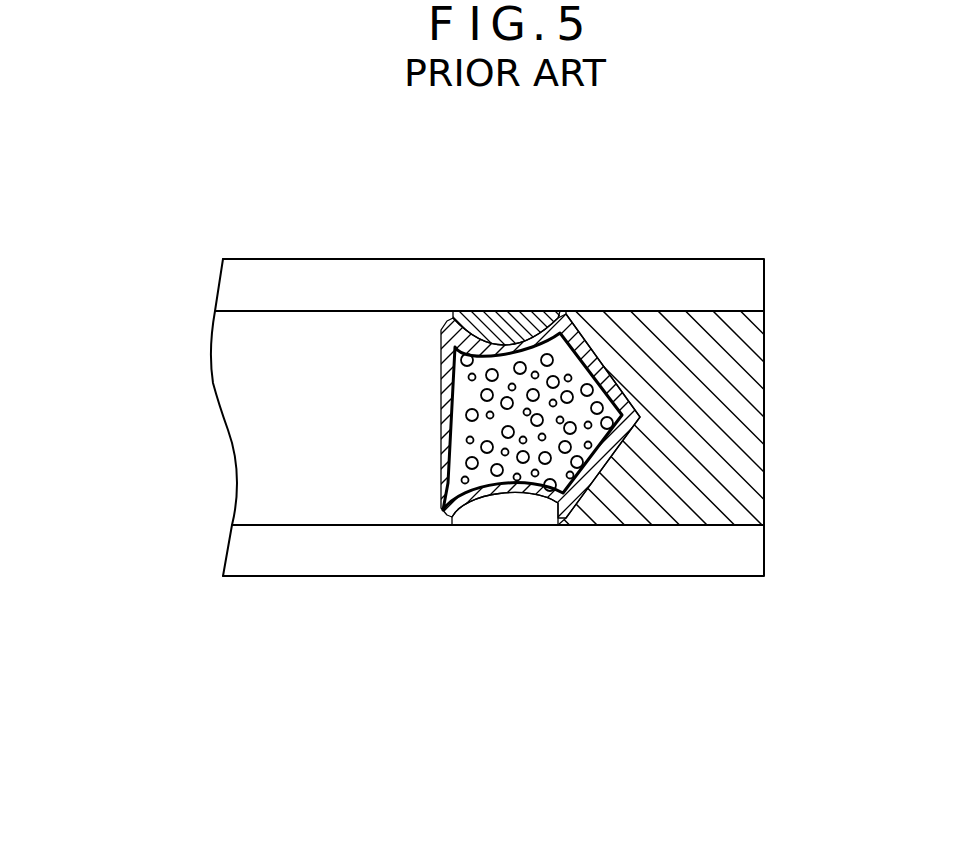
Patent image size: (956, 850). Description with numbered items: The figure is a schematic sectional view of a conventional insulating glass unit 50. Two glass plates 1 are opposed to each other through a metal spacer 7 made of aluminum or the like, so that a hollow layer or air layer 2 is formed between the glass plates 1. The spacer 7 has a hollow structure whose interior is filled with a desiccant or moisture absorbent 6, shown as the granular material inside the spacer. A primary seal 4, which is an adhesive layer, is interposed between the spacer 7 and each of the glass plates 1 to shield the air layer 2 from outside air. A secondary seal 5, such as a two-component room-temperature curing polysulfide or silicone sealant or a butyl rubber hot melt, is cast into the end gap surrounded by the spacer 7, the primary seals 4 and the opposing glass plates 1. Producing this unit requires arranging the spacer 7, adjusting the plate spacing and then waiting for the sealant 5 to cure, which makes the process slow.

The conventional insulating glass unit 50 is at (361, 223).
The glass plate 1 is at (757, 291).
The hollow layer (air layer) 2 is at (343, 510).
The primary seal (adhesive layer) 4 is at (501, 313).
The secondary seal (sealant) 5 is at (757, 420).
The desiccant (moisture absorbent) 6 is at (548, 462).
The metal spacer 7 is at (567, 326).